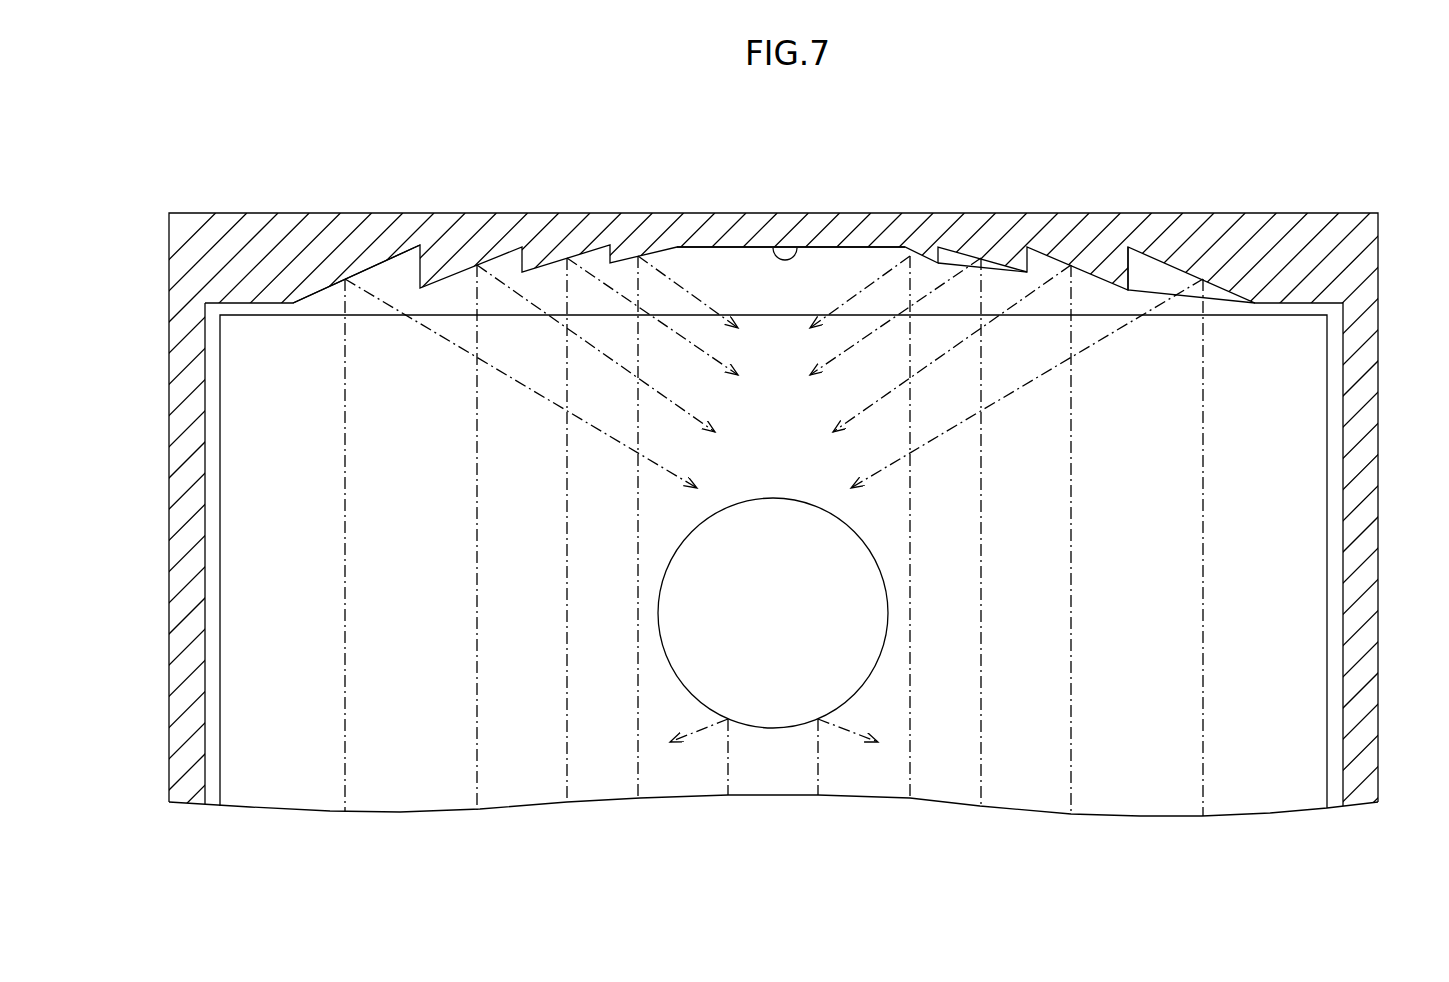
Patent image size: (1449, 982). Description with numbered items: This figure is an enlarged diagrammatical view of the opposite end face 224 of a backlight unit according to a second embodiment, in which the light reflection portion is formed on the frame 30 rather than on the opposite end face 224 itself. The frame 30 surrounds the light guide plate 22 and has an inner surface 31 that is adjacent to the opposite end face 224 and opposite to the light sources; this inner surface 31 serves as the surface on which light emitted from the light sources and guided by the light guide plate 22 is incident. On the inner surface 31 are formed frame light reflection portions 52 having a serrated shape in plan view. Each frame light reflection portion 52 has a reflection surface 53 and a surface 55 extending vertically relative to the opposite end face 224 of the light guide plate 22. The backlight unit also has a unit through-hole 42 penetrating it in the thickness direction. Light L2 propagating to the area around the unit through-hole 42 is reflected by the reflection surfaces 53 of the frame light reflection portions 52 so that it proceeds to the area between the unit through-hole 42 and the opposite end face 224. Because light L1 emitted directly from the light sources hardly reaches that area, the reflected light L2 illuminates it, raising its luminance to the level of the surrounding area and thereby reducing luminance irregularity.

The light guide plate 22 is at (1295, 532).
The frame 30 is at (187, 481).
The inner surface 31 is at (795, 242).
The unit through-hole 42 is at (668, 663).
The frame light reflection portion 52 is at (997, 283).
The reflection surface 53 is at (378, 268).
The surface extending vertically 55 is at (1128, 272).
The opposite end face 224 is at (750, 310).
The light L1 is at (728, 767).
The light L2 is at (1203, 778).